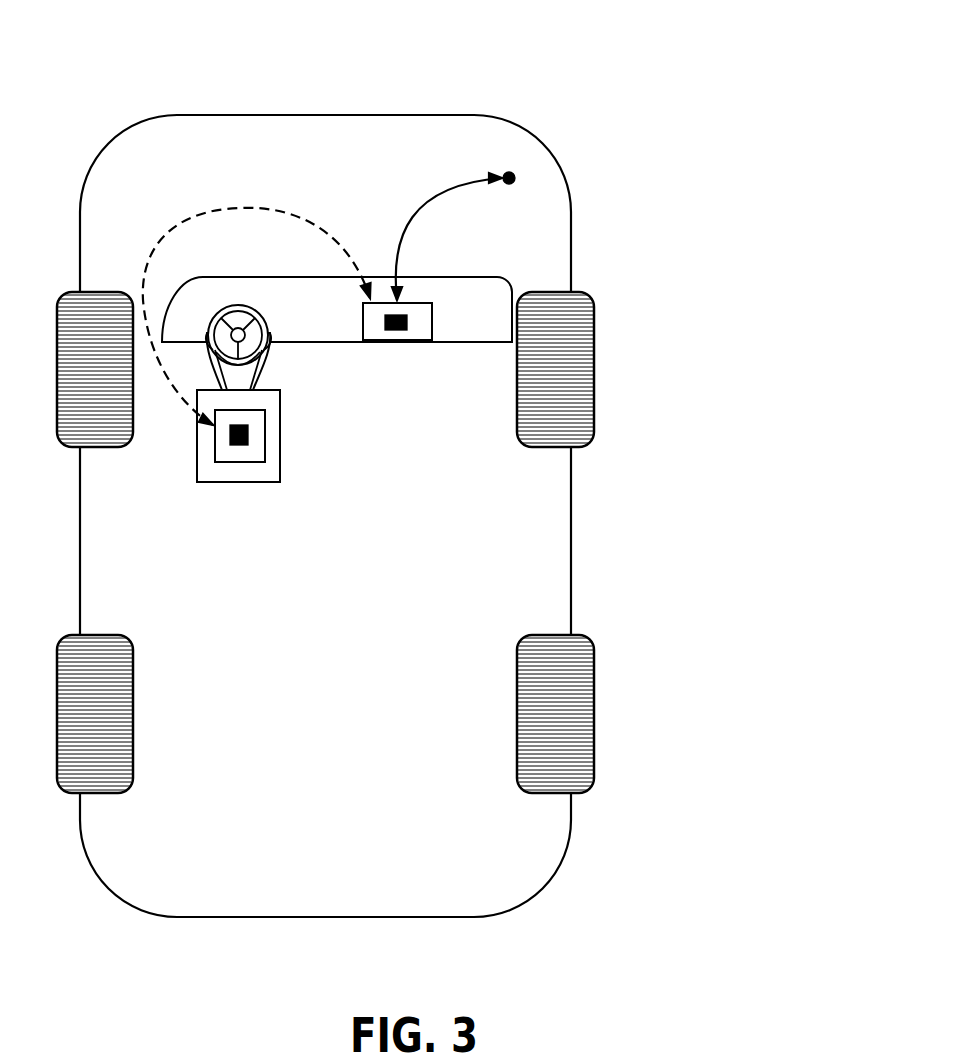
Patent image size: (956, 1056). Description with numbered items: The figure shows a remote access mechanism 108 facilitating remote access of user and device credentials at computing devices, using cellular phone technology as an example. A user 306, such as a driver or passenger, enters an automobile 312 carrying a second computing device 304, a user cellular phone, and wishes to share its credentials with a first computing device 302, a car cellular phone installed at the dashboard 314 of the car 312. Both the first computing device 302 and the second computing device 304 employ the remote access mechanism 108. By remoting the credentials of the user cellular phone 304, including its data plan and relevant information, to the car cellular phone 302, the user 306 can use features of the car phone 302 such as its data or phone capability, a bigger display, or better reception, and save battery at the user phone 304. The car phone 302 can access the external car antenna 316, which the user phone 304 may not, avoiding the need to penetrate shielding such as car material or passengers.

The automobile 312 is at (432, 115).
The external car antenna 316 is at (513, 175).
The dashboard 314 is at (477, 275).
The first computing device 302 is at (432, 315).
The remote access mechanism 108 is at (248, 435).
The user 306 is at (337, 406).
The second computing device 304 is at (230, 462).